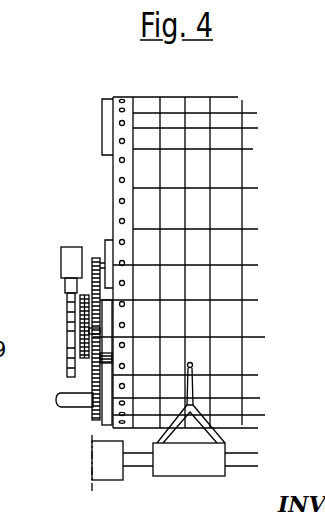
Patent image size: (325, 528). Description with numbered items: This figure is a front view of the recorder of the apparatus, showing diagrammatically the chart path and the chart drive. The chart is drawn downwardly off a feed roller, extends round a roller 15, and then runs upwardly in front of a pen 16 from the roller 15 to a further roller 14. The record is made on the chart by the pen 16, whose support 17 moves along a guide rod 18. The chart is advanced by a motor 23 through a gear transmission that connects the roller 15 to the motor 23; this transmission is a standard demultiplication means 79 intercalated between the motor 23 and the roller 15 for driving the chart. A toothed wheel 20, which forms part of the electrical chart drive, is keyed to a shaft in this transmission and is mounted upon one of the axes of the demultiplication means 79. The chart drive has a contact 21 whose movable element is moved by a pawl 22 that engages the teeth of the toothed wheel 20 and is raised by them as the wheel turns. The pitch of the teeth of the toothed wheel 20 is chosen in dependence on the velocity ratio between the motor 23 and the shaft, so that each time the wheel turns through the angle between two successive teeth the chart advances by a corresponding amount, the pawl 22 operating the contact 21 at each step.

The roller 14 is at (103, 128).
The motor 23 is at (108, 243).
The contact 21 is at (72, 267).
The pawl 22 is at (73, 287).
The toothed wheel 20 is at (72, 336).
The demultiplication means 79 is at (84, 363).
The roller 15 is at (108, 413).
The pen 16 is at (193, 395).
The support 17 is at (188, 464).
The guide rod 18 is at (136, 460).